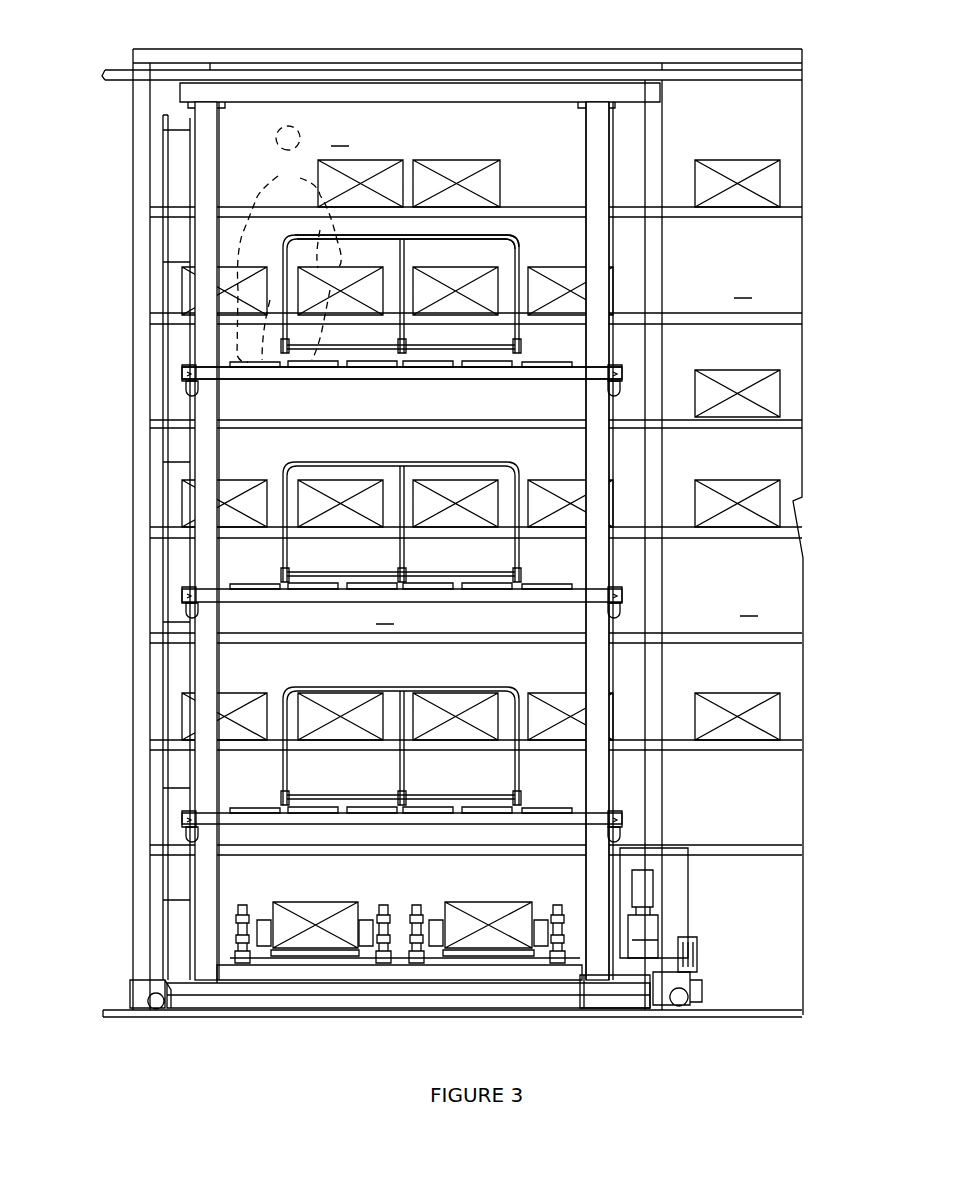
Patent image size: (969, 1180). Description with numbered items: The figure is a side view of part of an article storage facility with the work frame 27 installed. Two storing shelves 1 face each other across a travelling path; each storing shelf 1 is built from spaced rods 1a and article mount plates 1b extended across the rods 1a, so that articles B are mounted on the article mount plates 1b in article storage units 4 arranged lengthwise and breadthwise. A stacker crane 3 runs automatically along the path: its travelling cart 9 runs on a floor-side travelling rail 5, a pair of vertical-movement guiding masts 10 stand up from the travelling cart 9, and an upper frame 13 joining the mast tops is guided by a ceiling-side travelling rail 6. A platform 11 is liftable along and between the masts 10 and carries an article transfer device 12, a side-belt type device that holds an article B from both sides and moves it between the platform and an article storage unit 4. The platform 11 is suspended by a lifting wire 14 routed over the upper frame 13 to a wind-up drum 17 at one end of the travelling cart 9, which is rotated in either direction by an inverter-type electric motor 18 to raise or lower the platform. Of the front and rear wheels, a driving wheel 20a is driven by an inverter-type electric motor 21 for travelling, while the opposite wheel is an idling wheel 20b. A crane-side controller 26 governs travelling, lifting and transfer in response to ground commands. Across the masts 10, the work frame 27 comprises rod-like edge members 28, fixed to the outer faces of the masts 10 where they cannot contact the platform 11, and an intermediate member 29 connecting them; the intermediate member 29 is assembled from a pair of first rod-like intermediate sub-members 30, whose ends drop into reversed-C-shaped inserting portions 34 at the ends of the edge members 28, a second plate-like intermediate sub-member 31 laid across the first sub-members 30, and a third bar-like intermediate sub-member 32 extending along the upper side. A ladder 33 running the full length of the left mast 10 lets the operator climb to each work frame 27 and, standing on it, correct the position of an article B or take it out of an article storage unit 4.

The storing shelf 1 is at (162, 45).
The rod 1a is at (140, 162).
The article mount plate 1b is at (340, 435).
The stacker crane 3 is at (622, 246).
The article storage unit 4 is at (349, 146).
The travelling rail 5 is at (740, 1008).
The travelling rail 6 is at (470, 72).
The travelling cart 9 is at (445, 998).
The vertical-movement guiding mast 10 is at (212, 118).
The platform 11 is at (350, 975).
The article transfer device 12 is at (265, 910).
The upper frame 13 is at (480, 95).
The lifting wire 14 is at (218, 412).
The wind-up drum 17 is at (600, 985).
The electric inverter-type motor 18 is at (655, 900).
The driving wheel 20a is at (680, 1005).
The idling wheel 20b is at (170, 1008).
The electric motor for travelling 21 is at (700, 957).
The crane-side controller 26 is at (678, 875).
The work frame 27 is at (530, 262).
The edge member 28 is at (188, 386).
The intermediate member 29 is at (395, 382).
The first intermediate sub-member 30 is at (372, 380).
The second intermediate sub-member 31 is at (345, 368).
The third intermediate sub-member 32 is at (418, 240).
The ladder 33 is at (165, 700).
The inserting portion 34 is at (185, 372).
The article B is at (445, 165).